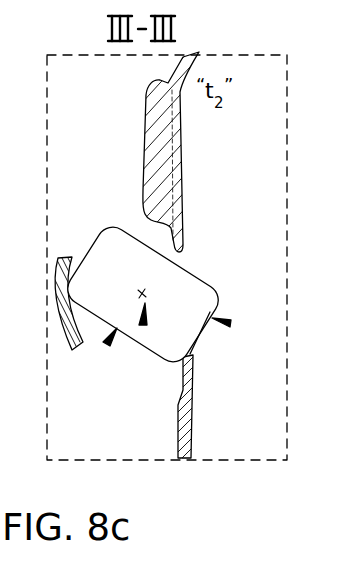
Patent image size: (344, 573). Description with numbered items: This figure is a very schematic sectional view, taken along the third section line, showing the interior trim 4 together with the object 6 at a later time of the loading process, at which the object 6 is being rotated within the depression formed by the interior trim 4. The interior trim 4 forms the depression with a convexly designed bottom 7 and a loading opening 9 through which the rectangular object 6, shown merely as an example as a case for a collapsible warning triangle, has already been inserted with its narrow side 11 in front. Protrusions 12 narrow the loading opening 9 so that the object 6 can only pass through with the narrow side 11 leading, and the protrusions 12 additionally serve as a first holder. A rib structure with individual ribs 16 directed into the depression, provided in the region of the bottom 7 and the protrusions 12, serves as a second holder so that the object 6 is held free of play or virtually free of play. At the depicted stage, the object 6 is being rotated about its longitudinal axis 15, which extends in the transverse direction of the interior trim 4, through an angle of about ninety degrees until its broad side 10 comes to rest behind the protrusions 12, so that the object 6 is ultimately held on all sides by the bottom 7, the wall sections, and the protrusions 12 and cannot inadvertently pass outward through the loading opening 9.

The interior trim 4 is at (192, 65).
The protrusions 12 is at (173, 147).
The ribs 16 is at (163, 187).
The bottom 7 is at (55, 312).
The loading opening 9 is at (196, 249).
The object 6 is at (200, 333).
The broad side 10 is at (108, 345).
The narrow side 11 is at (230, 324).
The longitudinal axis 15 is at (143, 325).